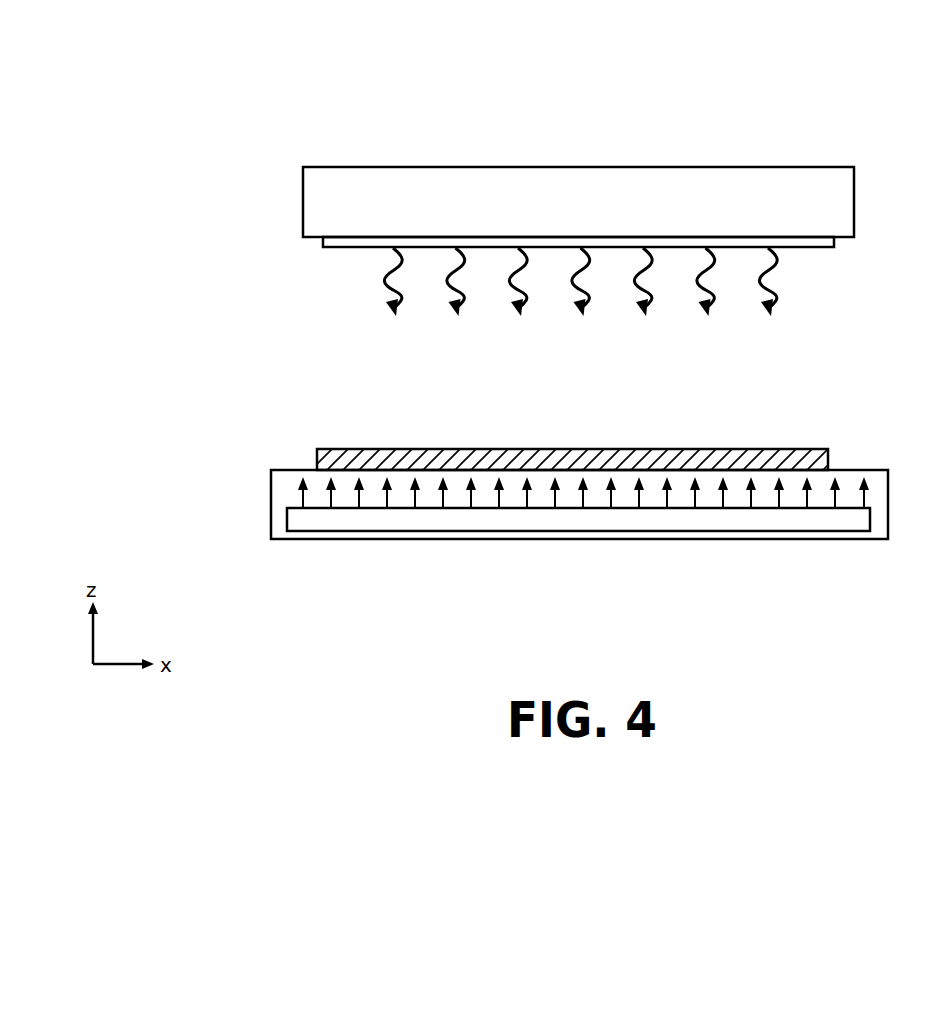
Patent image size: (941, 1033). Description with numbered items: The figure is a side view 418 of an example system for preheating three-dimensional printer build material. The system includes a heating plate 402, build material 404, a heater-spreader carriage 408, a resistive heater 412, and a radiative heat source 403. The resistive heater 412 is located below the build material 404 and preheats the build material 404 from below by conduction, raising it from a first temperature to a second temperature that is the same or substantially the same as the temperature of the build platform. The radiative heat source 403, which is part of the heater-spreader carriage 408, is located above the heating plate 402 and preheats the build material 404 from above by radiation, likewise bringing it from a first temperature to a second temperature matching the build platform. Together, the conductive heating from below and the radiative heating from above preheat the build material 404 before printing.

The side view 418 is at (213, 90).
The heater-spreader carriage 408 is at (303, 193).
The radiative heat source 403 is at (322, 241).
The build material 404 is at (378, 449).
The heating plate 402 is at (271, 500).
The resistive heater 412 is at (369, 533).